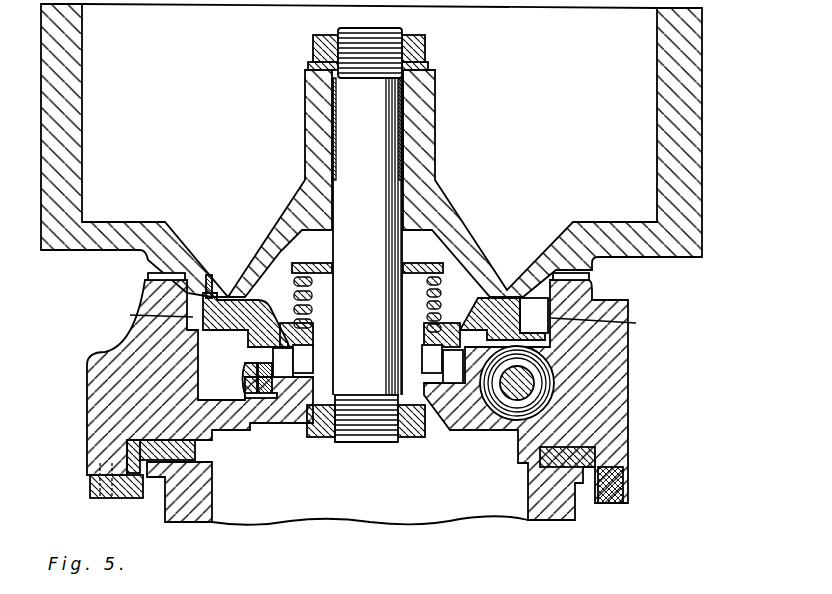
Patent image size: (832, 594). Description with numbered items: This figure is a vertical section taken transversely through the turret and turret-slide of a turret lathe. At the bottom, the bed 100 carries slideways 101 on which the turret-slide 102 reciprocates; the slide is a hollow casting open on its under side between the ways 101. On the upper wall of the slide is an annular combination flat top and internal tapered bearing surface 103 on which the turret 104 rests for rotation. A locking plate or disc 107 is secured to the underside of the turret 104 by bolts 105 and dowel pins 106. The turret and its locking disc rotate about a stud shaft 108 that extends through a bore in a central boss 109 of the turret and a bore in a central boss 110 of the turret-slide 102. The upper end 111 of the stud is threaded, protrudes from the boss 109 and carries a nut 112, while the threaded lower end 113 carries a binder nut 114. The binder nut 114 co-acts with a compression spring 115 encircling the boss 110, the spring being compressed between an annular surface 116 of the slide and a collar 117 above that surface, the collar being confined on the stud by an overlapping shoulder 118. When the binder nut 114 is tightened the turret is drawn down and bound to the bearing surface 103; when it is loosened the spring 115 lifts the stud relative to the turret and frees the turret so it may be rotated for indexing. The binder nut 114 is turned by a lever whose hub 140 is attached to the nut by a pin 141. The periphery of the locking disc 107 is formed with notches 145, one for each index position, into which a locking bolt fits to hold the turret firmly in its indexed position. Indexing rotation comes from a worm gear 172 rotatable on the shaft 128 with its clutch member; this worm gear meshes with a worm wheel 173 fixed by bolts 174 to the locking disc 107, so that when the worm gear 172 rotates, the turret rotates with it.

The bed 100 is at (212, 510).
The slideways 101 is at (212, 473).
The turret-slide 102 is at (628, 417).
The bearing surface 103 is at (150, 276).
The turret 104 is at (704, 160).
The bolts 105 is at (518, 296).
The dowel pins 106 is at (209, 275).
The locking plate or disc 107 is at (263, 313).
The stud shaft 108 is at (392, 137).
The central boss of the turret 109 is at (430, 95).
The central boss of the turret-slide 110 is at (317, 277).
The upper end of stud 111 is at (388, 32).
The nut 112 is at (426, 48).
The lower end of stud 113 is at (365, 420).
The binder nut 114 is at (402, 438).
The compression spring 115 is at (437, 287).
The annular surface 116 is at (443, 327).
The collar 117 is at (438, 275).
The overlapping shoulder 118 is at (353, 262).
The shaft 128 is at (510, 400).
The hub 140 is at (315, 437).
The pin 141 is at (345, 443).
The notches 145 is at (382, 320).
The worm gear 172 is at (497, 417).
The worm wheel 173 is at (241, 383).
The bolts 174 is at (260, 400).